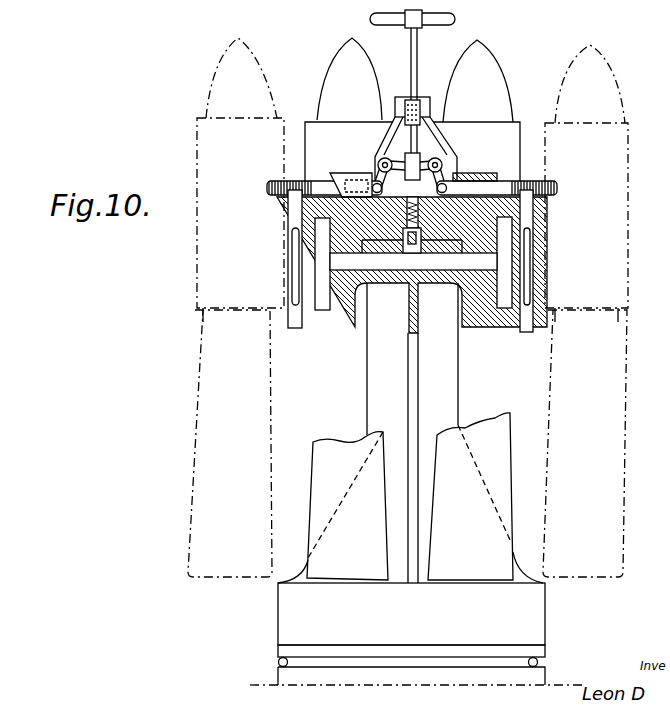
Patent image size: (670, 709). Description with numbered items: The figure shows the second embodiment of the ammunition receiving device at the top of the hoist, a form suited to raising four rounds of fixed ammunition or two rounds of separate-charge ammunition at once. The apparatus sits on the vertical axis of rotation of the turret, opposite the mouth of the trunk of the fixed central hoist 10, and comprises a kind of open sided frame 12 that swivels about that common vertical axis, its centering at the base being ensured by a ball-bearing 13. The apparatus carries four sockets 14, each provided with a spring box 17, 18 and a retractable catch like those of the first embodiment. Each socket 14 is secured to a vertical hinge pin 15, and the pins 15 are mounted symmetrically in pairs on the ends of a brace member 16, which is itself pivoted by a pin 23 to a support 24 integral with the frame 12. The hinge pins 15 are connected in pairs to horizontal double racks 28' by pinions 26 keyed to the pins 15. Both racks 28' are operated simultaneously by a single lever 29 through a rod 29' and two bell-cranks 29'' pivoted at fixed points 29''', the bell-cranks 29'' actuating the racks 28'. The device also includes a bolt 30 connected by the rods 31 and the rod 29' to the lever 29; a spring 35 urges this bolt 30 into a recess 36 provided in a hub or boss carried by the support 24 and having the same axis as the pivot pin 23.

The fixed central hoist 10 is at (282, 673).
The open sided frame 12 is at (535, 613).
The ball-bearing 13 is at (542, 660).
The sockets 14 is at (327, 450).
The vertical hinge pin 15 is at (292, 220).
The brace member 16 is at (342, 282).
The spring box 17 is at (305, 122).
The spring box 18 is at (338, 62).
The pin 23 is at (485, 263).
The support 24 is at (413, 343).
The pinions 26 is at (290, 182).
The horizontal double racks 28' is at (412, 182).
The lever 29 is at (412, 81).
The rod 29' is at (429, 139).
The bell-cranks 29'' is at (406, 169).
The fixed points 29''' is at (427, 151).
The bolt 30 is at (415, 253).
The rods 31 is at (405, 188).
The spring 35 is at (417, 188).
The recess 36 is at (408, 255).